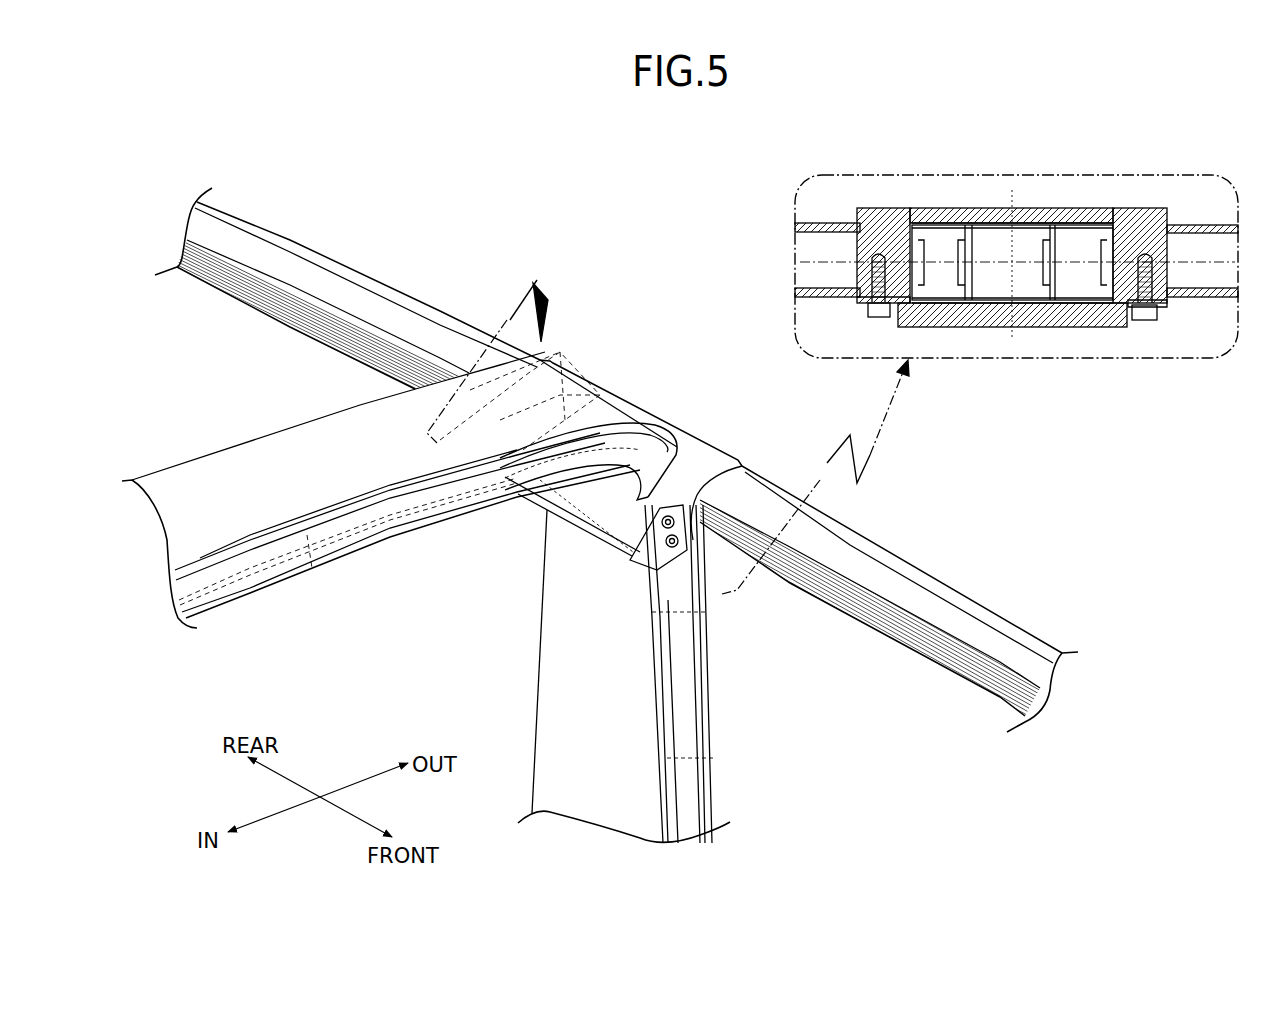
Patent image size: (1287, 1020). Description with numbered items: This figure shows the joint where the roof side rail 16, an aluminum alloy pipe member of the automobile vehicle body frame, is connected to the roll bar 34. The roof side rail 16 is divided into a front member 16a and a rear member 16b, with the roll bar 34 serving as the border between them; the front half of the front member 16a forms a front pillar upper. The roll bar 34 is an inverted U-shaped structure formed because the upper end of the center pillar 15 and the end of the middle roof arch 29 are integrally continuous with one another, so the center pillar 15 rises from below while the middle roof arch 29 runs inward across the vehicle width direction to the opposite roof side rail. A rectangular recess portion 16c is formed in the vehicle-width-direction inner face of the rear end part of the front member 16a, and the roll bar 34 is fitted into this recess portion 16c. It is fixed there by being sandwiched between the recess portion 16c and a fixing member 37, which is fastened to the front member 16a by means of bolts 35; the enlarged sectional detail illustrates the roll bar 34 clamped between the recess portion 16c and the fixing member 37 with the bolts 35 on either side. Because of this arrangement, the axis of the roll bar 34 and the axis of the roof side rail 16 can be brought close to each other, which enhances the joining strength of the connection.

The center pillar 15 is at (557, 682).
The roof side rail 16 is at (913, 545).
The front member 16a is at (973, 632).
The rear member 16b is at (327, 267).
The recess portion 16c is at (587, 404).
The middle roof arch 29 is at (268, 452).
The roll bar 34 is at (720, 713).
The bolt 35 is at (500, 460).
The fixing member 37 is at (582, 527).